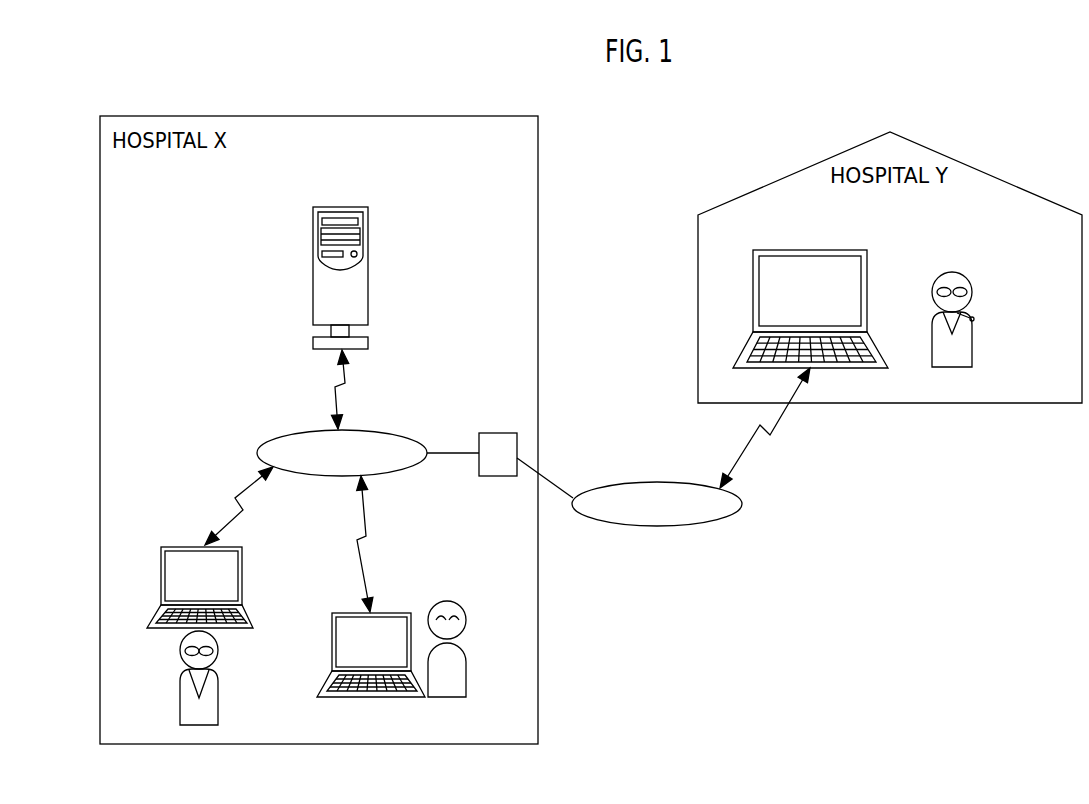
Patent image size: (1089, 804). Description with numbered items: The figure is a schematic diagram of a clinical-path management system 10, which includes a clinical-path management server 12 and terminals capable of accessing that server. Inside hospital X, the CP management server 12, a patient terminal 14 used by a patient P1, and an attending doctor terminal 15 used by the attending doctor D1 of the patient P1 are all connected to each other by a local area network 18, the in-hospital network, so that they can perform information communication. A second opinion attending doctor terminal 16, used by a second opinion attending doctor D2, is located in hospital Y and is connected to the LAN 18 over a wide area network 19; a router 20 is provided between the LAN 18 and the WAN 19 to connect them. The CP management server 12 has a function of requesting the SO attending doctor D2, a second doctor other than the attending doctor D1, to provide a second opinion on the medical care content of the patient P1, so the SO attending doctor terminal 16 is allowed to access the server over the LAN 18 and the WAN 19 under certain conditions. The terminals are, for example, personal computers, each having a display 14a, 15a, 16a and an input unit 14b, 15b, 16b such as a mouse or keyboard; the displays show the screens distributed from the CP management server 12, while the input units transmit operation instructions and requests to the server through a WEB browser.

The clinical-path management system 10 is at (812, 575).
The clinical-path management server 12 is at (347, 207).
The patient terminal 14 is at (352, 633).
The display 14a is at (338, 645).
The input unit 14b is at (334, 677).
The attending doctor terminal 15 is at (180, 564).
The display 15a is at (166, 573).
The input unit 15b is at (162, 607).
The second opinion attending doctor terminal 16 is at (832, 287).
The display 16a is at (852, 290).
The input unit 16b is at (863, 347).
The local area network 18 is at (390, 430).
The wide area network 19 is at (660, 482).
The router 20 is at (498, 433).
The attending doctor D1 is at (180, 718).
The second opinion attending doctor D2 is at (972, 357).
The patient P1 is at (466, 684).